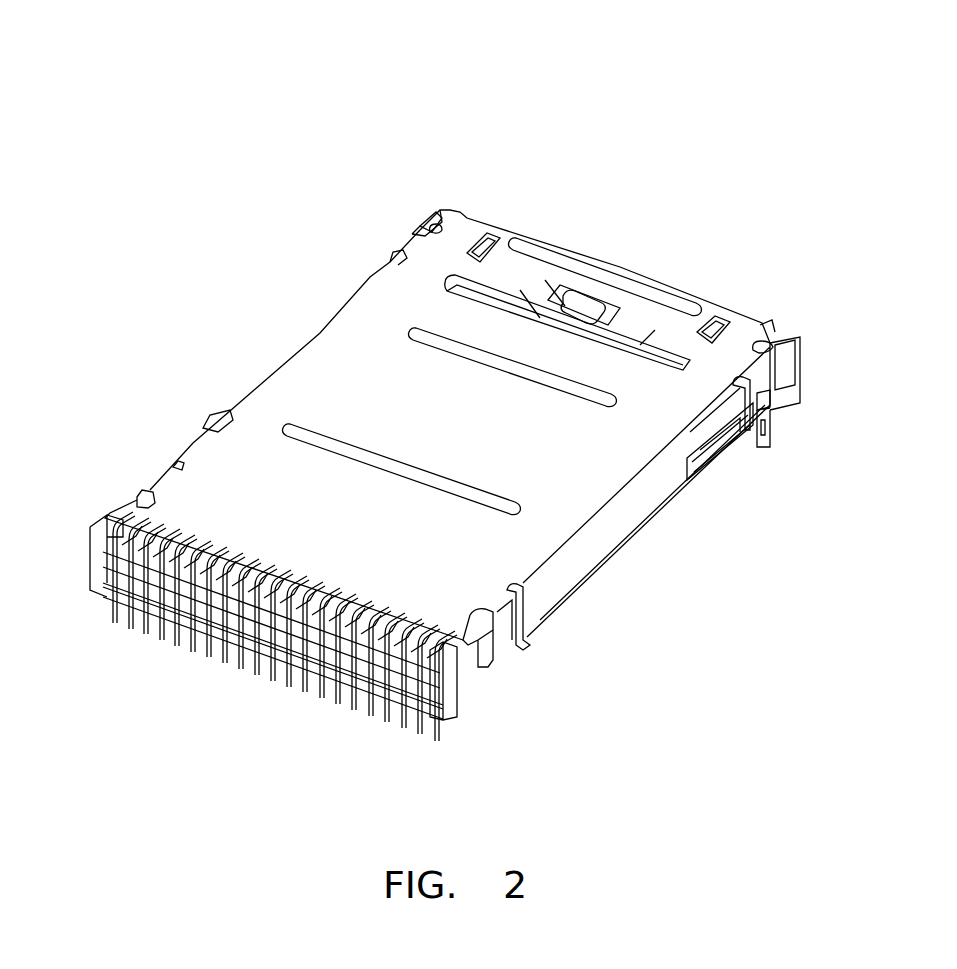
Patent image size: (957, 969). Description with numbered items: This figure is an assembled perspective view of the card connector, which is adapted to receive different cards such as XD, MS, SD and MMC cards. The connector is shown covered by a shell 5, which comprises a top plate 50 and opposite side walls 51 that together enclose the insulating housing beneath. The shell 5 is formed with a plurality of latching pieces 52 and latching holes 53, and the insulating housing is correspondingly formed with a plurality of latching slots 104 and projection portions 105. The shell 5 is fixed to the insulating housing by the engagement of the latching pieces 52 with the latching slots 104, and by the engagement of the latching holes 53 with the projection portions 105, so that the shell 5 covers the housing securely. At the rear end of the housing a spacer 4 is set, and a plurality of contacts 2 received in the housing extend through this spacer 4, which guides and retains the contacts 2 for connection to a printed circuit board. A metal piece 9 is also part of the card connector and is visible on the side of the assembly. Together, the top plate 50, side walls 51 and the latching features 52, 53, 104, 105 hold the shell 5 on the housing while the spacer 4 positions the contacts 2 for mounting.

The contacts 2 is at (207, 650).
The spacer 4 is at (287, 647).
The shell 5 is at (247, 475).
The top plate 50 is at (345, 322).
The side walls 51 is at (137, 497).
The latching pieces 52 is at (440, 222).
The latching holes 53 is at (510, 640).
The metal piece 9 is at (717, 463).
The latching slots 104 is at (430, 225).
The projection portions 105 is at (507, 652).